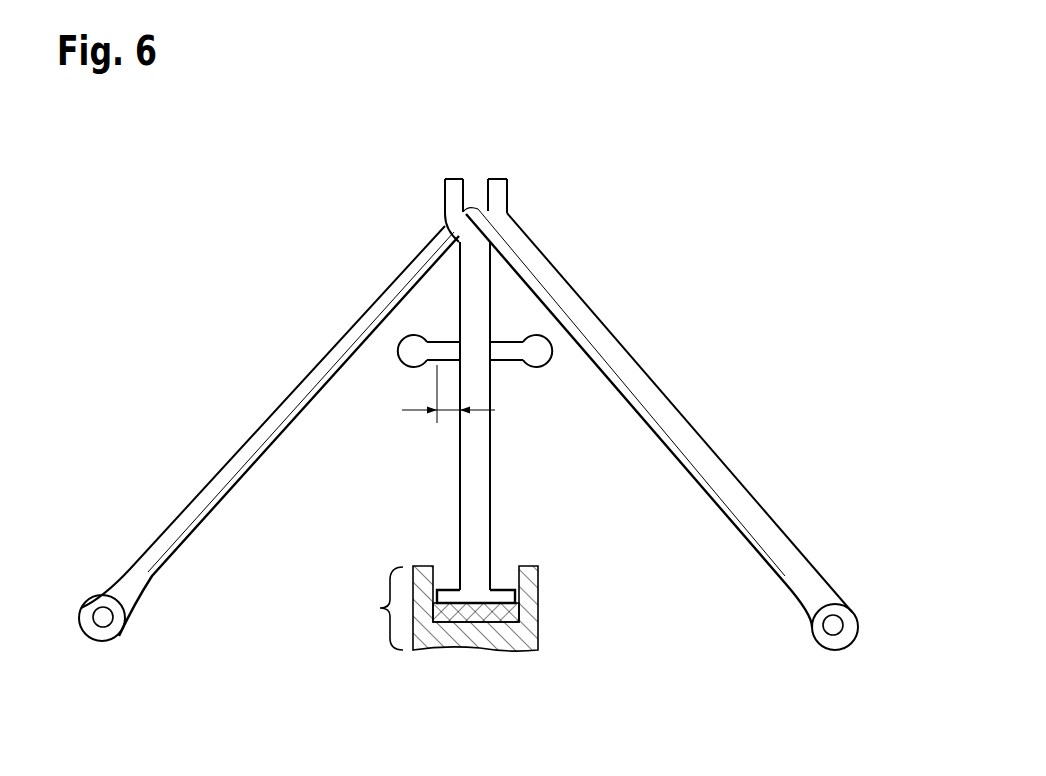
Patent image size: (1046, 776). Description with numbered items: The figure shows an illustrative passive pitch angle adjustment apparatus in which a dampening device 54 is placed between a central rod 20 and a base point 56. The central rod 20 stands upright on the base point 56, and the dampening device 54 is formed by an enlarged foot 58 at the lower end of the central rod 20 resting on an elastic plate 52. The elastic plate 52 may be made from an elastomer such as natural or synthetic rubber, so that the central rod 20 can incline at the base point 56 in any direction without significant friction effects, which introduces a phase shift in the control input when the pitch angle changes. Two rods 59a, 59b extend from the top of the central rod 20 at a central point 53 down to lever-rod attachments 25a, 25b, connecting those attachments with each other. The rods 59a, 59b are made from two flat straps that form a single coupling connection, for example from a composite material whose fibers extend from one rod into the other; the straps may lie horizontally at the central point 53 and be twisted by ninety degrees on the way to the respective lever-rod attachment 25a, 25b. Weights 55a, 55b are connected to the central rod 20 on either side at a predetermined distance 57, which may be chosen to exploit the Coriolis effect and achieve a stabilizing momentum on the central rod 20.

The central point 53 is at (479, 210).
The central rod 20 is at (477, 490).
The rod 59a is at (725, 498).
The rod 59b is at (220, 485).
The lever-rod attachment 25a is at (833, 625).
The lever-rod attachment 25b is at (105, 618).
The weight 55a is at (410, 360).
The weight 55b is at (535, 362).
The predetermined distance 57 is at (450, 413).
The enlarged foot 58 is at (497, 593).
The elastic plate 52 is at (507, 610).
The base point 56 is at (478, 637).
The dampening device 54 is at (375, 608).